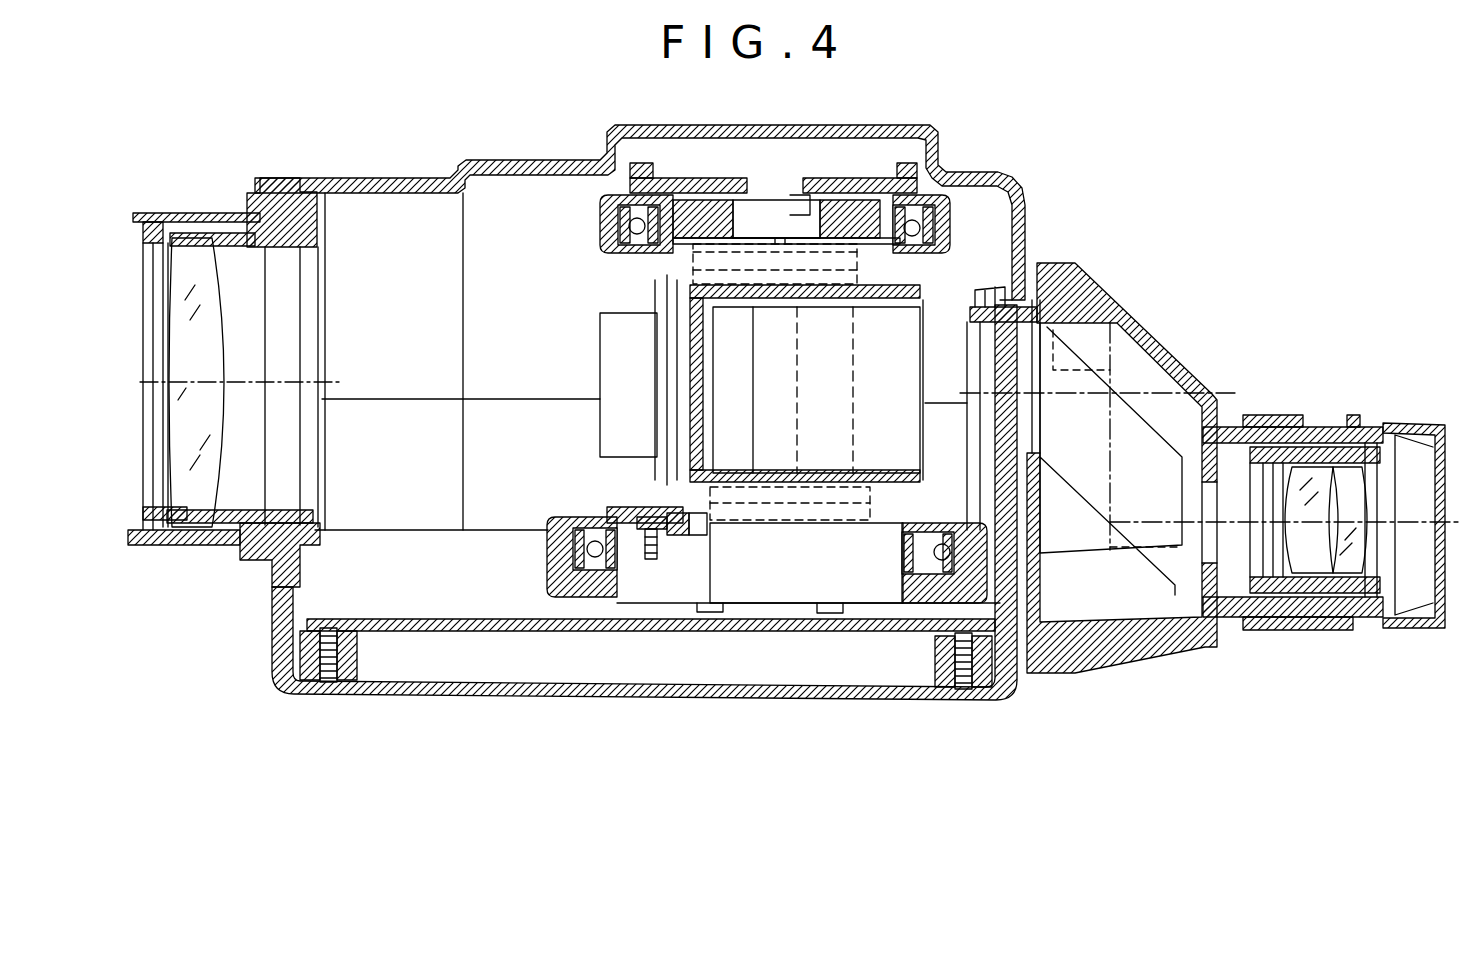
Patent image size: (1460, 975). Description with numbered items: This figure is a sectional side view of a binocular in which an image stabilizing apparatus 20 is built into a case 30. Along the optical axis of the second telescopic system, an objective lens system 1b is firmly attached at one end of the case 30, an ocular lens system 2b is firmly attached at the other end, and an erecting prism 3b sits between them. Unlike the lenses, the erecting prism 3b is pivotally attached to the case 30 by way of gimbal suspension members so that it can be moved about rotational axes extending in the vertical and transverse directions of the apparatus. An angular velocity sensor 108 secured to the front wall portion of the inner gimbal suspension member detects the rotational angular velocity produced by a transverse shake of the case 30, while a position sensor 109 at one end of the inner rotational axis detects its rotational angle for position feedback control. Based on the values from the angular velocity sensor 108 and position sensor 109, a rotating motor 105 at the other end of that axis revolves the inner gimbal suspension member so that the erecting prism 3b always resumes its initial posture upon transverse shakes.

The objective lens system 1b is at (180, 205).
The ocular lens system 2b is at (1320, 413).
The erecting prism 3b is at (905, 336).
The image stabilizing apparatus 20 is at (968, 226).
The case 30 is at (505, 160).
The rotating motor 105 is at (773, 205).
The angular velocity sensor 108 is at (604, 332).
The position sensor 109 is at (665, 572).